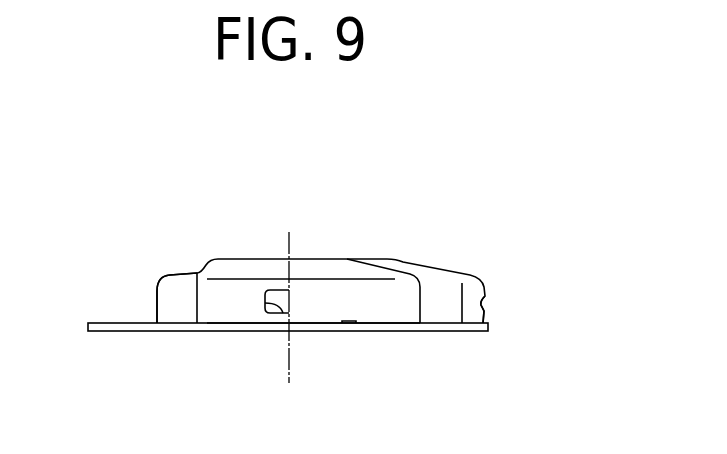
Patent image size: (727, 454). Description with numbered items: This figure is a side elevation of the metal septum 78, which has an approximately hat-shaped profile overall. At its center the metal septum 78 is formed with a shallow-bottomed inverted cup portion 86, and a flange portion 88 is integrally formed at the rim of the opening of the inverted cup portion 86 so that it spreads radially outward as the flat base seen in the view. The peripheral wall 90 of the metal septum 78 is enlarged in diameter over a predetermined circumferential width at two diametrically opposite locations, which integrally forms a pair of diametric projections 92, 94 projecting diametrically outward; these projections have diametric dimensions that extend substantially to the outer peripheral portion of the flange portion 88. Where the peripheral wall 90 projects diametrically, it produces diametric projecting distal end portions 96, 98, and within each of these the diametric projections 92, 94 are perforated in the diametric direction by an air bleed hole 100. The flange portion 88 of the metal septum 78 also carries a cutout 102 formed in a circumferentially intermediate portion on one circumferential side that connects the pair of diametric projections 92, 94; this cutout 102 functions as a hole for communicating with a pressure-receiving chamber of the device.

The metal septum 78 is at (400, 223).
The inverted cup portion 86 is at (146, 288).
The flange portion 88 is at (115, 331).
The peripheral wall 90 is at (169, 307).
The diametric projection 92 is at (248, 268).
The diametric projection 94 is at (447, 284).
The diametric projecting distal end portion 96 is at (242, 311).
The diametric projecting distal end portion 98 is at (475, 318).
The air bleed hole 100 is at (282, 318).
The cutout 102 is at (326, 331).